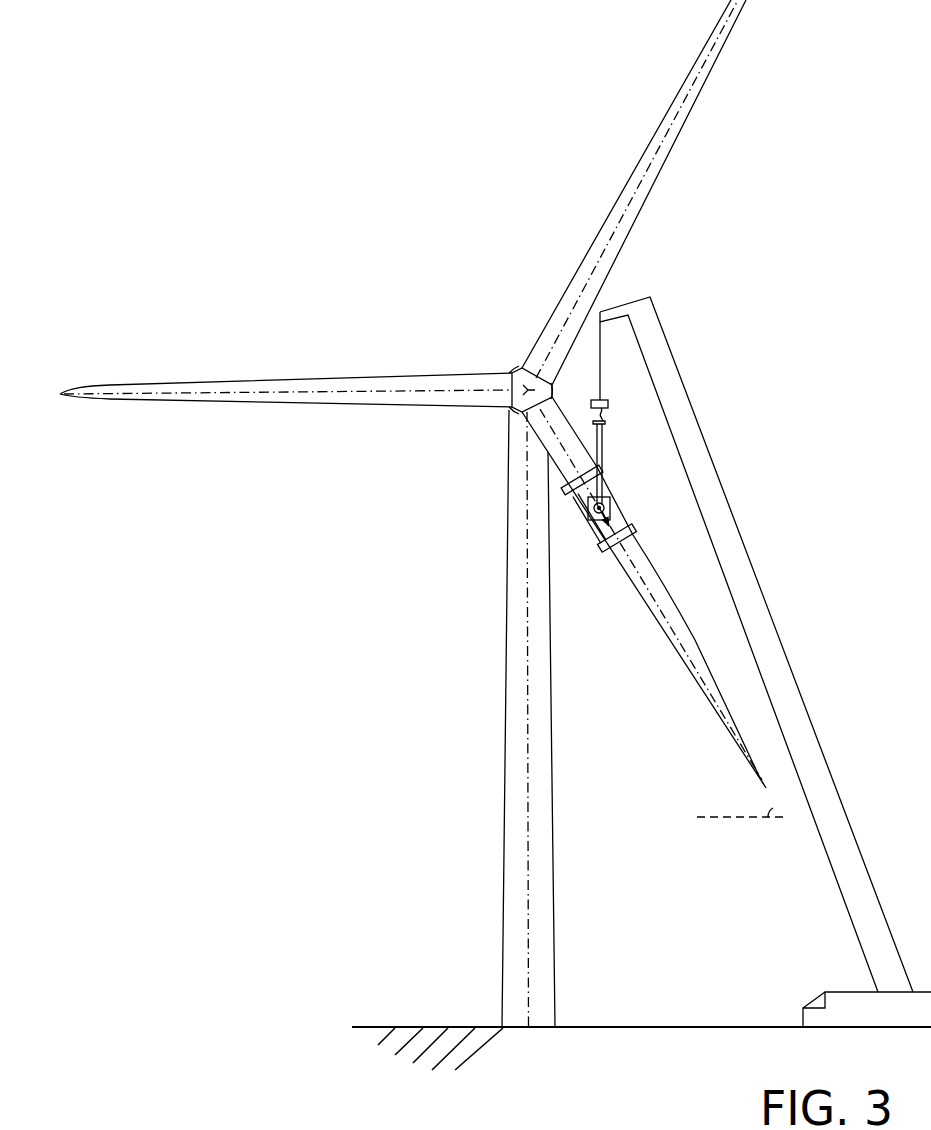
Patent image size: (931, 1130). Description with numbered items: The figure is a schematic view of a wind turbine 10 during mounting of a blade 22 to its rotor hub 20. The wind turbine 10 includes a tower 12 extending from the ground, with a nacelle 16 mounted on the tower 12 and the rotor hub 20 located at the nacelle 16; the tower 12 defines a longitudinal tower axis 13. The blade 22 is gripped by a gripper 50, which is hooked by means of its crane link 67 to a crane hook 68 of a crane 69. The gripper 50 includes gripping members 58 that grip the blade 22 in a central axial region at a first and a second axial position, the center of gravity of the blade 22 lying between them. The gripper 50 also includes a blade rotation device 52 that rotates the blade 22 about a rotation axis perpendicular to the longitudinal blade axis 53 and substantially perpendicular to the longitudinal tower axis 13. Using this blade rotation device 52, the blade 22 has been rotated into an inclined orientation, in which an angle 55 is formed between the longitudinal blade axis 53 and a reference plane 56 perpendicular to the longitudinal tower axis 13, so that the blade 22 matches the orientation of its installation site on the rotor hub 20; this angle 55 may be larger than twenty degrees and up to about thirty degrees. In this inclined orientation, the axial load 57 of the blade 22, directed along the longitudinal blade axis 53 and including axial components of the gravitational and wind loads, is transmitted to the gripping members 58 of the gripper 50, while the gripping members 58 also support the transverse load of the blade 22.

The wind turbine 10 is at (362, 226).
The tower 12 is at (507, 623).
The longitudinal tower axis 13 is at (527, 757).
The nacelle 16 is at (502, 368).
The rotor hub 20 is at (520, 367).
The blade 22 is at (662, 632).
The gripper 50 is at (646, 493).
The blade rotation device 52 is at (609, 497).
The longitudinal blade axis 53 is at (702, 689).
The angle 55 is at (770, 806).
The reference plane 56 is at (702, 818).
The axial load 57 is at (613, 521).
The gripping members 58 is at (570, 497).
The crane link 67 is at (603, 441).
The crane hook 68 is at (607, 412).
The crane 69 is at (772, 620).